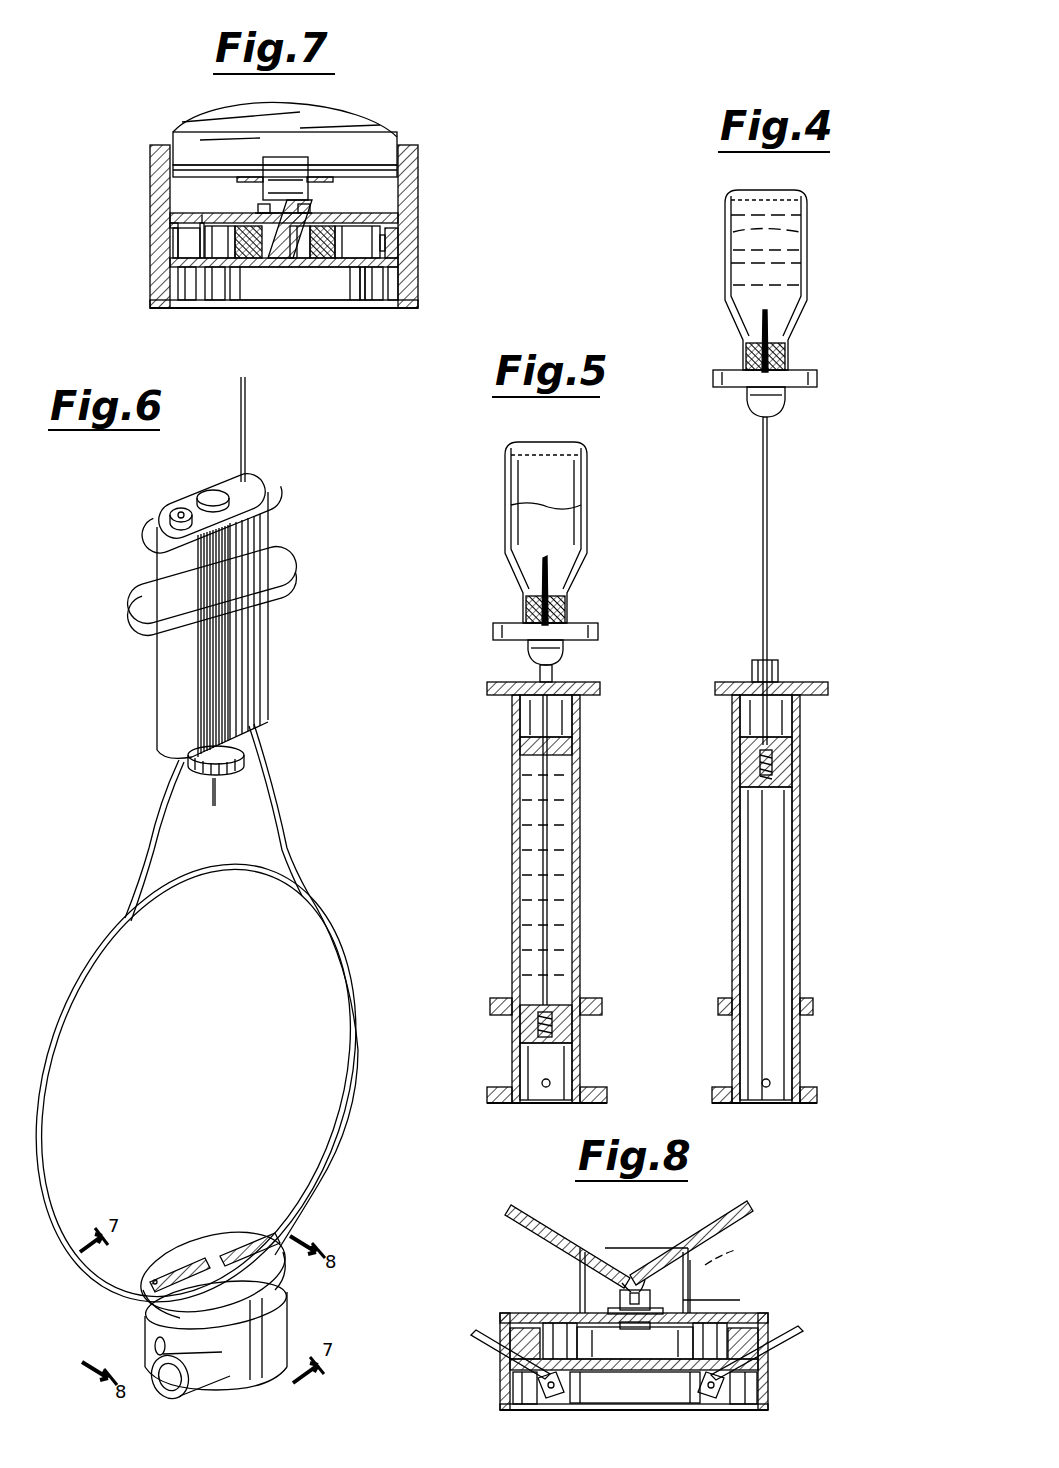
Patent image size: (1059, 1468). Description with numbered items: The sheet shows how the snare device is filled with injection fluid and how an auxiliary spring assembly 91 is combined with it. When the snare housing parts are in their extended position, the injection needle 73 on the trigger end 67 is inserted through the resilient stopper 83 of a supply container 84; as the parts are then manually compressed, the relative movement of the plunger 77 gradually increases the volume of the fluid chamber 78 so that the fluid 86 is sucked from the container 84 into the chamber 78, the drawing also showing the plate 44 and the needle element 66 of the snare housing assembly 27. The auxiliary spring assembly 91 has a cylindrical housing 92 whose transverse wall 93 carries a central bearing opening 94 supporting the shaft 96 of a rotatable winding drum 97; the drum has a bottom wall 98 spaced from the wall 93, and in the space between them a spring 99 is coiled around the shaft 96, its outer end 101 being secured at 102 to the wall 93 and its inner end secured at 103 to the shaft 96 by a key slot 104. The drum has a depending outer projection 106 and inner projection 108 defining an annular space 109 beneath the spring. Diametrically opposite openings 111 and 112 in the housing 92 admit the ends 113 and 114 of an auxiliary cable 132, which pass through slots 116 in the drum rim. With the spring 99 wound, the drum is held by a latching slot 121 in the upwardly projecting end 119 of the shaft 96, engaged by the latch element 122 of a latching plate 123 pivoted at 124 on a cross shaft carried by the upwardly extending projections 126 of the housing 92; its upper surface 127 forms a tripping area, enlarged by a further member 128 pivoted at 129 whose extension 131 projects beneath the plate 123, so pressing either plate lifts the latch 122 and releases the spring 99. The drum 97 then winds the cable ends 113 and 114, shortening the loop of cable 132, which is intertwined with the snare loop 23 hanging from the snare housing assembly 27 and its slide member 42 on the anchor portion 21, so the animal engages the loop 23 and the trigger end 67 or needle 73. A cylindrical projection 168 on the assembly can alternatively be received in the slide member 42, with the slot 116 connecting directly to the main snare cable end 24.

In FIG. 6, the anchor portion 21 is at (250, 420).
In FIG. 6, the snare loop 23 is at (155, 810).
In FIG. 6, the main snare cable end 24 is at (176, 508).
In FIG. 6, the snare housing assembly 27 is at (302, 602).
In FIG. 4, the slide member 42 is at (698, 1100).
In FIG. 5, the slide member 42 is at (615, 1098).
In FIG. 6, the slide member 42 is at (150, 528).
In FIG. 4, the mounting plate 44 is at (786, 682).
In FIG. 5, the mounting plate 44 is at (580, 682).
In FIG. 6, the mounting plate 44 is at (278, 652).
In FIG. 4, the needle 66 is at (770, 545).
In FIG. 5, the needle 66 is at (555, 795).
In FIG. 4, the trigger end 67 is at (793, 388).
In FIG. 5, the trigger end 67 is at (588, 640).
In FIG. 6, the trigger end 67 is at (248, 770).
In FIG. 4, the injection needle 73 is at (762, 320).
In FIG. 5, the injection needle 73 is at (560, 582).
In FIG. 6, the injection needle 73 is at (216, 806).
In FIG. 4, the plunger 77 is at (790, 770).
In FIG. 5, the plunger 77 is at (565, 1000).
In FIG. 4, the fluid chamber 78 is at (784, 870).
In FIG. 5, the fluid chamber 78 is at (568, 866).
In FIG. 4, the resilient stopper 83 is at (786, 355).
In FIG. 5, the resilient stopper 83 is at (567, 610).
In FIG. 4, the supply container 84 is at (725, 250).
In FIG. 5, the supply container 84 is at (587, 478).
In FIG. 4, the fluid 86 is at (733, 270).
In FIG. 5, the fluid 86 is at (560, 825).
In FIG. 7, the auxiliary spring assembly 91 is at (275, 227).
In FIG. 6, the auxiliary spring assembly 91 is at (231, 1298).
In FIG. 7, the cylindrical housing 92 is at (418, 222).
In FIG. 6, the cylindrical housing 92 is at (280, 1345).
In FIG. 7, the transverse wall 93 is at (200, 225).
In FIG. 7, the central bearing opening 94 is at (300, 228).
In FIG. 7, the shaft 96 is at (262, 208).
In FIG. 7, the winding drum 97 is at (408, 254).
In FIG. 7, the bottom wall 98 is at (245, 292).
In FIG. 7, the spring 99 is at (345, 240).
In FIG. 7, the outer end 101 is at (174, 245).
In FIG. 7, the securing point 102 is at (190, 240).
In FIG. 7, the securing point 103 is at (293, 272).
In FIG. 7, the key slot 104 is at (284, 280).
In FIG. 7, the outer projection 106 is at (393, 296).
In FIG. 7, the inner projection 108 is at (363, 290).
In FIG. 7, the annular space 109 is at (378, 295).
In FIG. 6, the opening 111 is at (155, 1348).
In FIG. 8, the opening 111 is at (770, 1350).
In FIG. 8, the opening 112 is at (465, 1360).
In FIG. 6, the cable end 113 is at (115, 1318).
In FIG. 8, the cable end 113 is at (797, 1328).
In FIG. 6, the cable end 114 is at (305, 1232).
In FIG. 8, the cable end 114 is at (480, 1345).
In FIG. 8, the slots 116 is at (510, 1380).
In FIG. 8, the upwardly projecting end 119 is at (690, 1290).
In FIG. 8, the latching slot 121 is at (620, 1300).
In FIG. 7, the latch element 122 is at (266, 176).
In FIG. 8, the latch element 122 is at (652, 1283).
In FIG. 7, the latching plate 123 is at (388, 130).
In FIG. 6, the latching plate 123 is at (213, 1238).
In FIG. 8, the latching plate 123 is at (535, 1255).
In FIG. 7, the pivot 124 is at (402, 148).
In FIG. 8, the pivot 124 is at (588, 1240).
In FIG. 7, the upwardly extending projections 126 is at (152, 156).
In FIG. 8, the upwardly extending projections 126 is at (645, 1250).
In FIG. 7, the upper surface 127 is at (333, 108).
In FIG. 8, the upper surface 127 is at (512, 1210).
In FIG. 6, the further member 128 is at (155, 1280).
In FIG. 8, the further member 128 is at (745, 1210).
In FIG. 8, the pivot 129 is at (718, 1248).
In FIG. 8, the extension 131 is at (615, 1282).
In FIG. 6, the auxiliary cable 132 is at (45, 1082).
In FIG. 6, the cylindrical projection 168 is at (192, 1383).